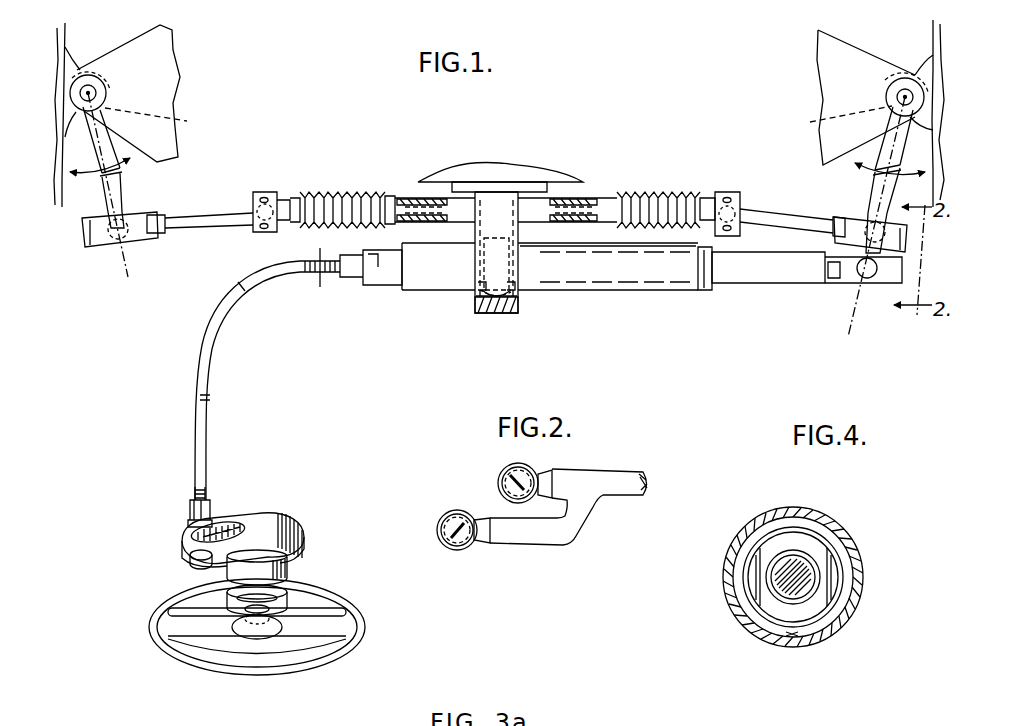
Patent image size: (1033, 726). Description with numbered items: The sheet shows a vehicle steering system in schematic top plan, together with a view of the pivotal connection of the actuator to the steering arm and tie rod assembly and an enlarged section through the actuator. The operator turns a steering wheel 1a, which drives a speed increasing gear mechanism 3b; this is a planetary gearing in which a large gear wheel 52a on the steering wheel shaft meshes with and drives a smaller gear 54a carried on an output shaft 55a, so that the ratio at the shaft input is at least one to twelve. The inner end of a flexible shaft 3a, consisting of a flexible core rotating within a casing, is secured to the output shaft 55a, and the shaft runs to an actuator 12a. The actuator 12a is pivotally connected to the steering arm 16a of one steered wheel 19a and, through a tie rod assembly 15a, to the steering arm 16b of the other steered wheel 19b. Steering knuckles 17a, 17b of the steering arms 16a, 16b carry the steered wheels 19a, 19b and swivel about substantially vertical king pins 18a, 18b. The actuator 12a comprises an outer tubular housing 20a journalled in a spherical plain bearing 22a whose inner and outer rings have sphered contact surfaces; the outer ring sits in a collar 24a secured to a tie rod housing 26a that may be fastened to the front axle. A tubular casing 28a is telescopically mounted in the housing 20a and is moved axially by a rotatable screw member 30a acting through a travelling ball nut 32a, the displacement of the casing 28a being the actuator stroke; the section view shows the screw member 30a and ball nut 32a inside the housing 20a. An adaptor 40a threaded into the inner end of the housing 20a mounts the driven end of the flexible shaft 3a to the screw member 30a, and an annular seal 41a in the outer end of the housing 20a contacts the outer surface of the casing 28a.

In FIG. 1, the steering wheel 1a is at (157, 607).
In FIG. 1, the flexible shaft 3a is at (202, 366).
In FIG. 1, the speed increasing gear mechanism 3b is at (280, 528).
In FIG. 1, the actuator 12a is at (634, 291).
In FIG. 1, the tie rod assembly 15a is at (482, 187).
In FIG. 1, the steering arm 16a is at (877, 179).
In FIG. 2, the steering arm 16a is at (619, 490).
In FIG. 1, the steering arm 16b is at (118, 193).
In FIG. 1, the steering knuckle 17a is at (833, 120).
In FIG. 1, the steering knuckle 17b is at (166, 120).
In FIG. 1, the king pin 18a is at (900, 93).
In FIG. 1, the king pin 18b is at (92, 93).
In FIG. 1, the steered wheel 19a is at (931, 37).
In FIG. 1, the steered wheel 19b is at (67, 33).
In FIG. 1, the outer tubular housing 20a is at (608, 272).
In FIG. 4, the outer tubular housing 20a is at (768, 512).
In FIG. 1, the spherical plain bearing 22a is at (487, 300).
In FIG. 1, the collar 24a is at (520, 309).
In FIG. 1, the tie rod housing 26a is at (503, 210).
In FIG. 1, the tubular casing 28a is at (775, 279).
In FIG. 4, the screw member 30a is at (783, 577).
In FIG. 4, the travelling ball nut 32a is at (810, 547).
In FIG. 1, the adaptor 40a is at (378, 286).
In FIG. 1, the annular seal 41a is at (705, 292).
In FIG. 1, the large gear wheel 52a is at (233, 517).
In FIG. 1, the smaller gear 54a is at (190, 536).
In FIG. 1, the output shaft 55a is at (193, 503).